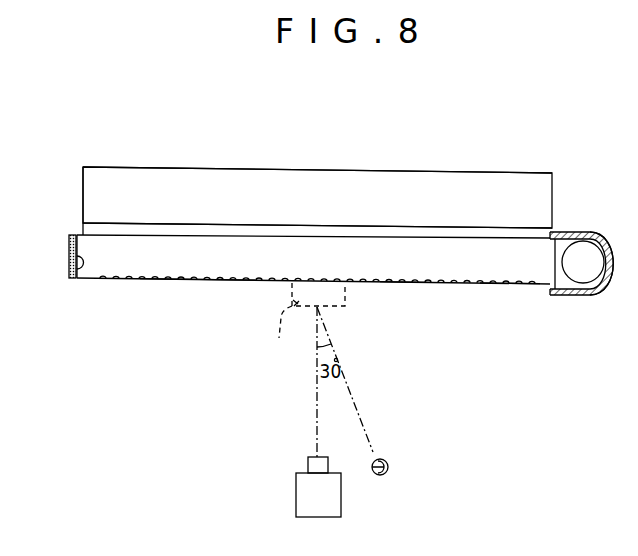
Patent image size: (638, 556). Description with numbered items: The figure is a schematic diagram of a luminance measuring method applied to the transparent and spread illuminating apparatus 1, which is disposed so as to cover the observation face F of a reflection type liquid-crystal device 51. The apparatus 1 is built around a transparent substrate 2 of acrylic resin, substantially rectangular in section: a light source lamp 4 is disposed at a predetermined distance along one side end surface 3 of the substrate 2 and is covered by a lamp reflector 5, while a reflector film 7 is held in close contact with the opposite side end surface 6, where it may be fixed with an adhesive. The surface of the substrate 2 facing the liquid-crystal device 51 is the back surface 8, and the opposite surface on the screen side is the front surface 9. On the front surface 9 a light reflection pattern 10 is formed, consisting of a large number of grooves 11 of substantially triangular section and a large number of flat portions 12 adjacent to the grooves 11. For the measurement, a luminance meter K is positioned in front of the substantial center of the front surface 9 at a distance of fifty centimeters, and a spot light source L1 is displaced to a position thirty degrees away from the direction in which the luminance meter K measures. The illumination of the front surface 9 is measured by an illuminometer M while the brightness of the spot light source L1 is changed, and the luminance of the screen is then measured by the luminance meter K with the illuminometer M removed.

The transparent and spread illuminating apparatus 1 is at (338, 253).
The transparent substrate 2 is at (118, 258).
The one side end surface 3 is at (568, 233).
The light source lamp 4 is at (587, 268).
The lamp reflector 5 is at (610, 273).
The other side end surface 6 is at (67, 277).
The reflector film 7 is at (70, 258).
The back surface 8 is at (193, 235).
The front surface 9 is at (98, 280).
The light reflection pattern 10 is at (194, 292).
The grooves 11 is at (407, 285).
The flat portions 12 is at (505, 285).
The reflection type liquid-crystal device 51 is at (443, 167).
The reflector plate R is at (303, 170).
The observation face F is at (454, 228).
The illuminometer M is at (306, 324).
The luminance meter K is at (302, 497).
The spot light source L1 is at (389, 463).